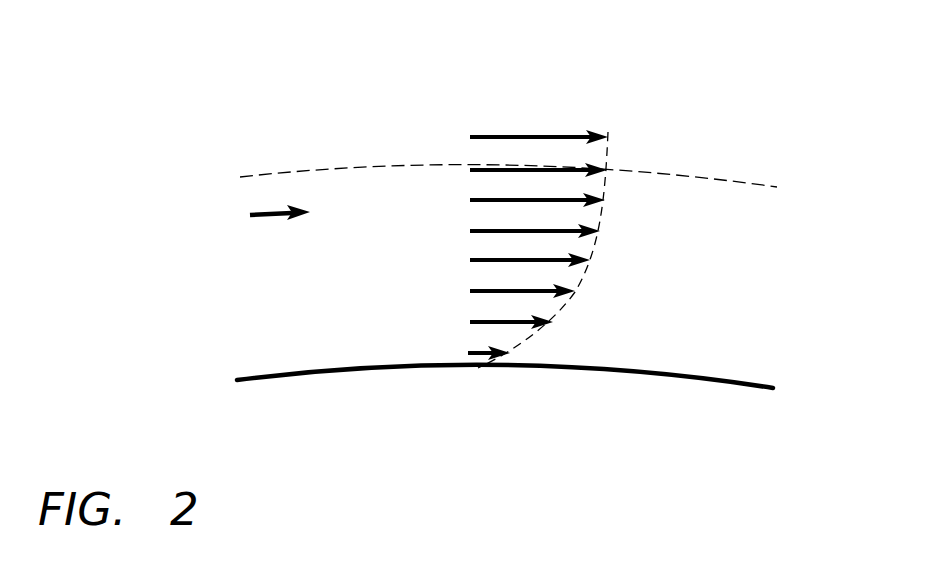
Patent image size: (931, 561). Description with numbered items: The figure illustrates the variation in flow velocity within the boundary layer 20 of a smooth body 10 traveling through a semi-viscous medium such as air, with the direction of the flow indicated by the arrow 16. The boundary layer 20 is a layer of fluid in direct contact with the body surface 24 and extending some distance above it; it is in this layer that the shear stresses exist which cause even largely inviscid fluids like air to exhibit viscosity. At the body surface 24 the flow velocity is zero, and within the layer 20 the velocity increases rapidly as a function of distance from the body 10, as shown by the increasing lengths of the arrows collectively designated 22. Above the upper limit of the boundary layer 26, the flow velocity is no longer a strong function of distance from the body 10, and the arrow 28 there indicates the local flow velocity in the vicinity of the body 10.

The smooth body 10 is at (617, 417).
The flow direction arrow 16 is at (275, 207).
The boundary layer 20 is at (732, 253).
The arrows 22 is at (463, 235).
The body surface 24 is at (478, 366).
The upper limit of the boundary layer 26 is at (687, 175).
The arrow 28 is at (513, 137).